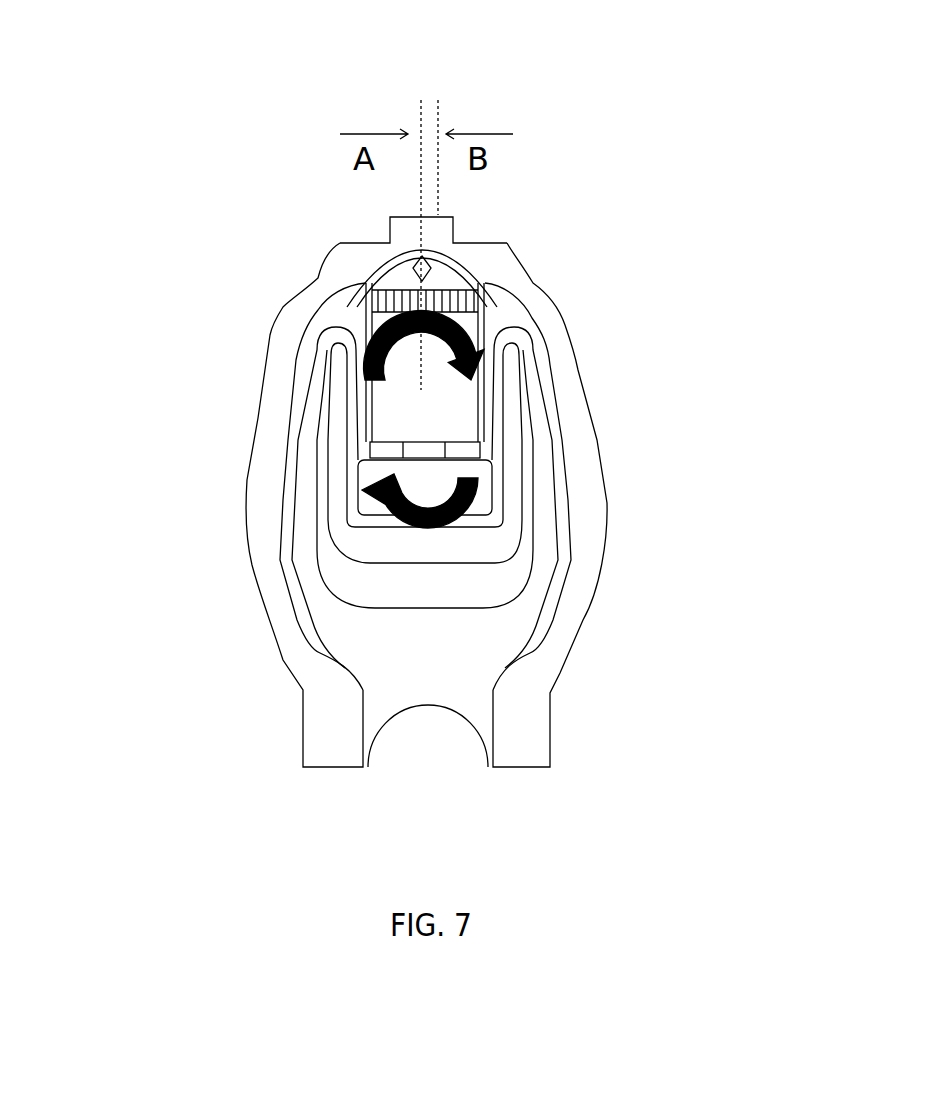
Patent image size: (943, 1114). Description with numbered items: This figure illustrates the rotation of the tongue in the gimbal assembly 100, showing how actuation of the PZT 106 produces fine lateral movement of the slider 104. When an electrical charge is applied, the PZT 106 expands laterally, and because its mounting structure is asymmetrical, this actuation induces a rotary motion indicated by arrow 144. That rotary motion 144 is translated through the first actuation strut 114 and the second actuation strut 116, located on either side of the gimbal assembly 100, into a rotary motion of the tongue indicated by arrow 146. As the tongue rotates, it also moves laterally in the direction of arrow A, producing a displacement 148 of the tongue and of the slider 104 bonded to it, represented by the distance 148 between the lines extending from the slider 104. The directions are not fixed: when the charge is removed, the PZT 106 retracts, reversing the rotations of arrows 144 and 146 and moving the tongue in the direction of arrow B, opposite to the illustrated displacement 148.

The gimbal assembly 100 is at (277, 62).
The slider 104 is at (463, 398).
The PZT 106 is at (483, 495).
The first actuation strut 114 is at (470, 441).
The second actuation strut 116 is at (350, 440).
The arrow indicating rotary motion 144 is at (420, 527).
The arrow indicating rotary motion of the tongue 146 is at (380, 330).
The displacement 148 is at (427, 118).